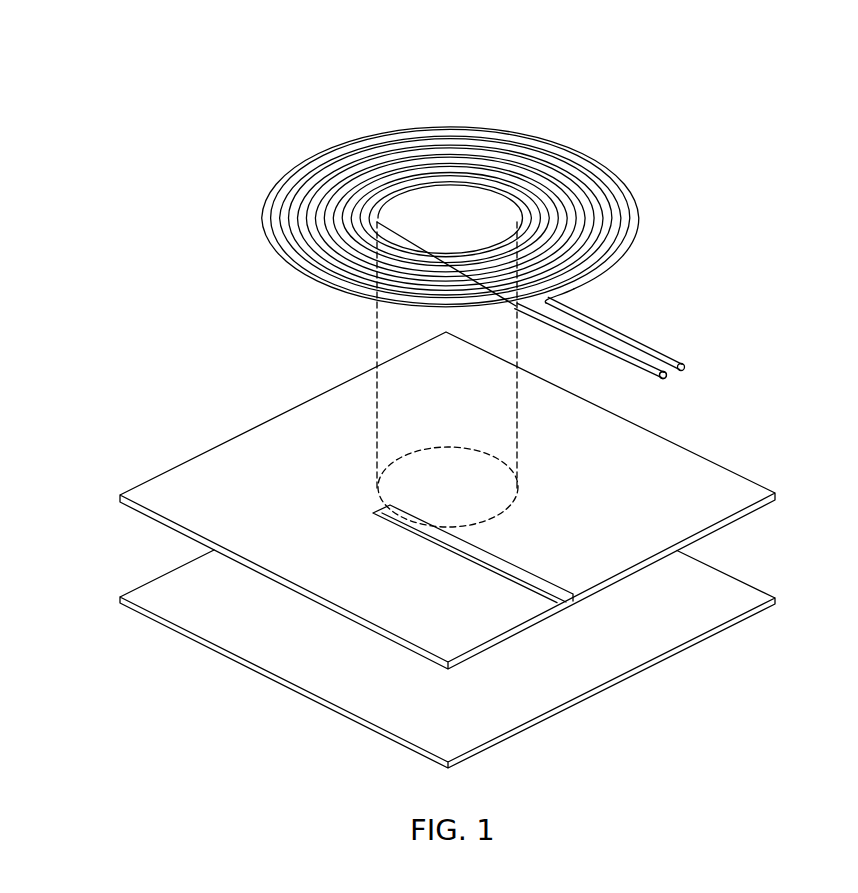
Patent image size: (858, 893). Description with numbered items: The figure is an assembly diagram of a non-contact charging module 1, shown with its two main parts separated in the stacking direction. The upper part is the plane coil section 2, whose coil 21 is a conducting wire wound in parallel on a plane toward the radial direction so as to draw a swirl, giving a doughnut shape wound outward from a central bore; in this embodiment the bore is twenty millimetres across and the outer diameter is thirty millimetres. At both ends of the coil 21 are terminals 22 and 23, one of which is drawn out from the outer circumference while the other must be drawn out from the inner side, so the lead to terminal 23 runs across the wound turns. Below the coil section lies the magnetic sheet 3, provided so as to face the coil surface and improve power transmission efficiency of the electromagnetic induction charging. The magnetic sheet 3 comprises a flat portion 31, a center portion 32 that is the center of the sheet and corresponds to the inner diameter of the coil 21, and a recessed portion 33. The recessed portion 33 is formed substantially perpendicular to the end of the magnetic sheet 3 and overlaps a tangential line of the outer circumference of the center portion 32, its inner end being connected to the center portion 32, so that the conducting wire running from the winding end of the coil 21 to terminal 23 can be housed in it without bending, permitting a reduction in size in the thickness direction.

The non-contact charging module 1 is at (723, 173).
The plane coil section 2 is at (588, 148).
The coil 21 is at (357, 137).
The terminal 22 is at (670, 355).
The terminal 23 is at (648, 378).
The magnetic sheet 3 is at (667, 467).
The flat portion 31 is at (287, 508).
The center portion 32 is at (458, 487).
The recessed portion 33 is at (550, 600).